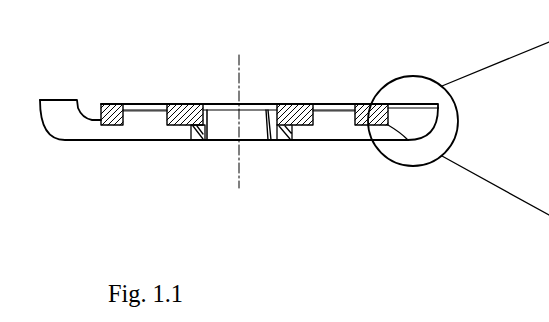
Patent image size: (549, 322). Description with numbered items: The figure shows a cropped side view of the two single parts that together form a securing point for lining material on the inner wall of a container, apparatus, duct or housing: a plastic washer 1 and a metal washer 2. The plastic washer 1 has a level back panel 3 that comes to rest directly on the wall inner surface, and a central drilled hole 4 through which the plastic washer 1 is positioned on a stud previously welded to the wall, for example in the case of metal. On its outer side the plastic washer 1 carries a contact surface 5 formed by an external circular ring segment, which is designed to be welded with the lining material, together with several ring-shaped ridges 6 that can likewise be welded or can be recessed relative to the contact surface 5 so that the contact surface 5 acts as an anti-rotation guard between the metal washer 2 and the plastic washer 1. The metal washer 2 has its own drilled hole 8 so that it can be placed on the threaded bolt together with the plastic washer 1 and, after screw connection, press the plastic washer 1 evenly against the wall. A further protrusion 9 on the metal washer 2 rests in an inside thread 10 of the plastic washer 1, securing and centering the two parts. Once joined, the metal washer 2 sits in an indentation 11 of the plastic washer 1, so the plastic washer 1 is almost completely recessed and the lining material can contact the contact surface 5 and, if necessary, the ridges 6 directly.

The plastic washer 1 is at (65, 127).
The metal washer 2 is at (298, 104).
The back panel 3 is at (350, 128).
The central drilled hole 4 is at (209, 128).
The contact surface 5 is at (44, 99).
The ring-shaped ridges 6 is at (138, 115).
The drilled hole 8 is at (271, 122).
The protrusion 9 is at (190, 126).
The inside thread 10 is at (282, 128).
The indentation 11 is at (387, 104).